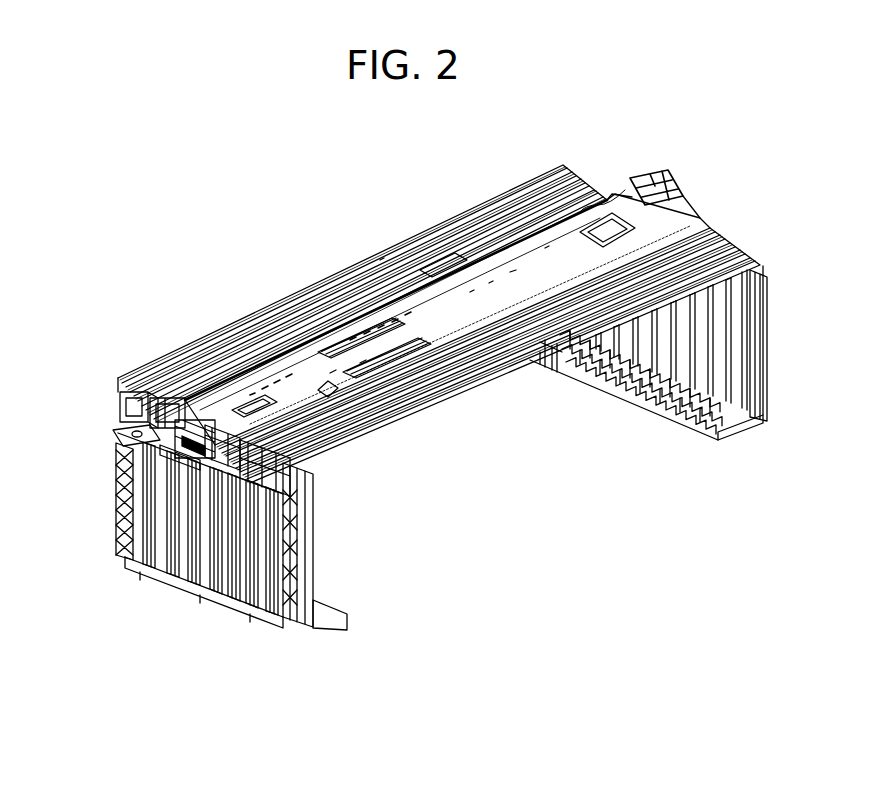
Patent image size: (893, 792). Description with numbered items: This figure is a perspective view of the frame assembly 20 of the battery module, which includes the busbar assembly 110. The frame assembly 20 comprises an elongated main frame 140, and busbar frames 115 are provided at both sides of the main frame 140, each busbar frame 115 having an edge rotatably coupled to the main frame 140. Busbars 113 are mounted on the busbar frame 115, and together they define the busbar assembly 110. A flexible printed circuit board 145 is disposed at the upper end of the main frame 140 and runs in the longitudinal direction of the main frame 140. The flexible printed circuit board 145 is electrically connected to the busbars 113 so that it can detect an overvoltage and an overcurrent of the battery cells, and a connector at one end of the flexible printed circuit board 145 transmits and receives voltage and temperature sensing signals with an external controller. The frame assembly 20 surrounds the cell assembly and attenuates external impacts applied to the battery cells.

The frame assembly 20 is at (400, 218).
The busbar assembly 110 is at (100, 468).
The busbars 113 is at (225, 590).
The busbar frame 115 is at (305, 548).
The main frame 140 is at (350, 290).
The flexible printed circuit board 145 is at (552, 248).